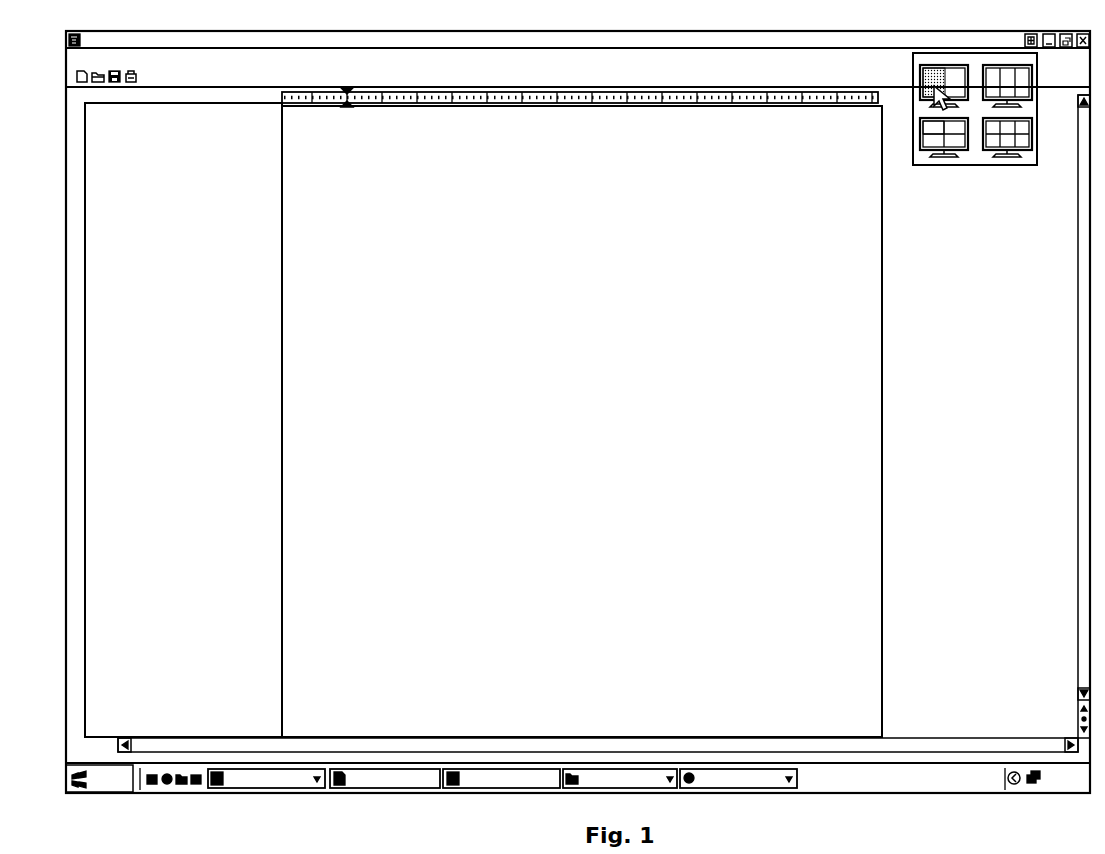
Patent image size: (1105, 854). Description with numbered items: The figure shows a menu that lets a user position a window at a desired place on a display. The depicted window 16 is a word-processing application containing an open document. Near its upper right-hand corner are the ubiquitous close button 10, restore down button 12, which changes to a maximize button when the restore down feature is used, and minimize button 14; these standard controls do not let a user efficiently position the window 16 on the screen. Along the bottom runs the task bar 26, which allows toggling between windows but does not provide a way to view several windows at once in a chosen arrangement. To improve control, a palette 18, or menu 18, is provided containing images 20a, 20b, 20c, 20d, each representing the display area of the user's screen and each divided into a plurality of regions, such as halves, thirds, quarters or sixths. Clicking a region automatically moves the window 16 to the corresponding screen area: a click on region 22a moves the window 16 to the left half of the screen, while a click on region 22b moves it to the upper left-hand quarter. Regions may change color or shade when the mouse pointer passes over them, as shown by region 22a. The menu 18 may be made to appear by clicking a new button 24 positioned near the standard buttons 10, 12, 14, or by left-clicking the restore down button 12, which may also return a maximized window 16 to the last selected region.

The close button 10 is at (1082, 47).
The restore down button 12 is at (1065, 47).
The minimize button 14 is at (1047, 47).
The window 16 is at (611, 77).
The palette 18 is at (973, 164).
The image 20a is at (918, 80).
The image 20b is at (1032, 78).
The image 20c is at (920, 142).
The image 20d is at (1032, 143).
The region 22a is at (933, 72).
The region 22b is at (930, 128).
The button 24 is at (1025, 41).
The task bar 26 is at (840, 778).